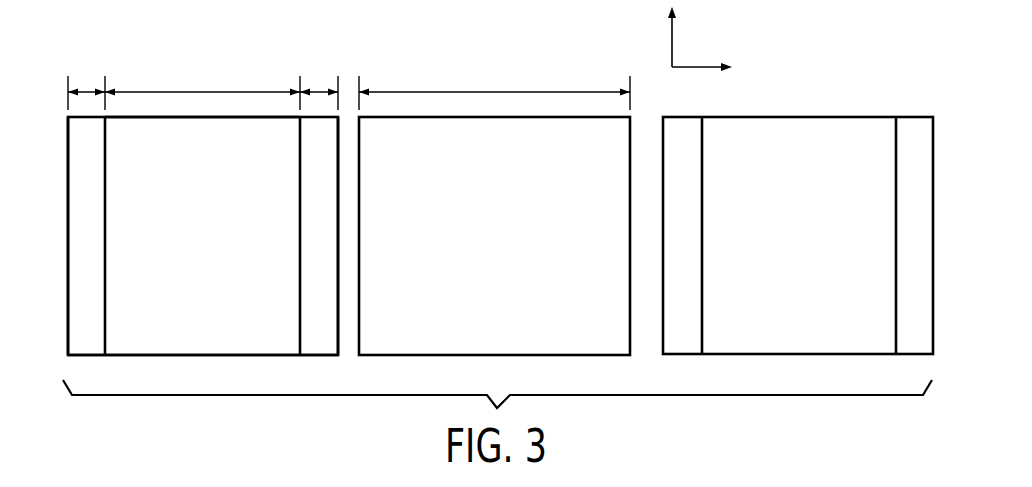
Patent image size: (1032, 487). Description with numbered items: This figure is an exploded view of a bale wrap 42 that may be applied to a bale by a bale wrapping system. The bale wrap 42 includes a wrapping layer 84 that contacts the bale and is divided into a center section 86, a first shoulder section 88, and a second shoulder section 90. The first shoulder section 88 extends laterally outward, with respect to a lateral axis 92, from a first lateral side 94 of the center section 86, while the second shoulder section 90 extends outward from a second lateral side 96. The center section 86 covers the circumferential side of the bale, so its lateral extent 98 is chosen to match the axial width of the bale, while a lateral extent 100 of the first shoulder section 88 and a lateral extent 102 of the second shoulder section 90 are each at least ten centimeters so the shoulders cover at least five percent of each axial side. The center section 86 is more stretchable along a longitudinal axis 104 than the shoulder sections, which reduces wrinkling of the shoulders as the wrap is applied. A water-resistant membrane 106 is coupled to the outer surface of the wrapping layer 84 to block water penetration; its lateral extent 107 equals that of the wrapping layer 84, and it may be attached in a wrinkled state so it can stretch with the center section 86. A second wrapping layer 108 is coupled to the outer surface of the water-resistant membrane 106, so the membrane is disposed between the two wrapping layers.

The bale wrap 42 is at (56, 169).
The wrapping layer 84 is at (203, 357).
The center section 86 is at (165, 332).
The first shoulder section 88 is at (328, 135).
The second shoulder section 90 is at (75, 317).
The lateral axis 92 is at (697, 68).
The first lateral side 94 is at (302, 333).
The second lateral side 96 is at (106, 303).
The lateral extent 98 is at (204, 92).
The lateral extent 100 is at (322, 90).
The lateral extent 102 is at (86, 90).
The longitudinal axis 104 is at (671, 43).
The water-resistant membrane 106 is at (541, 333).
The lateral extent 107 is at (493, 92).
The second wrapping layer 108 is at (800, 117).